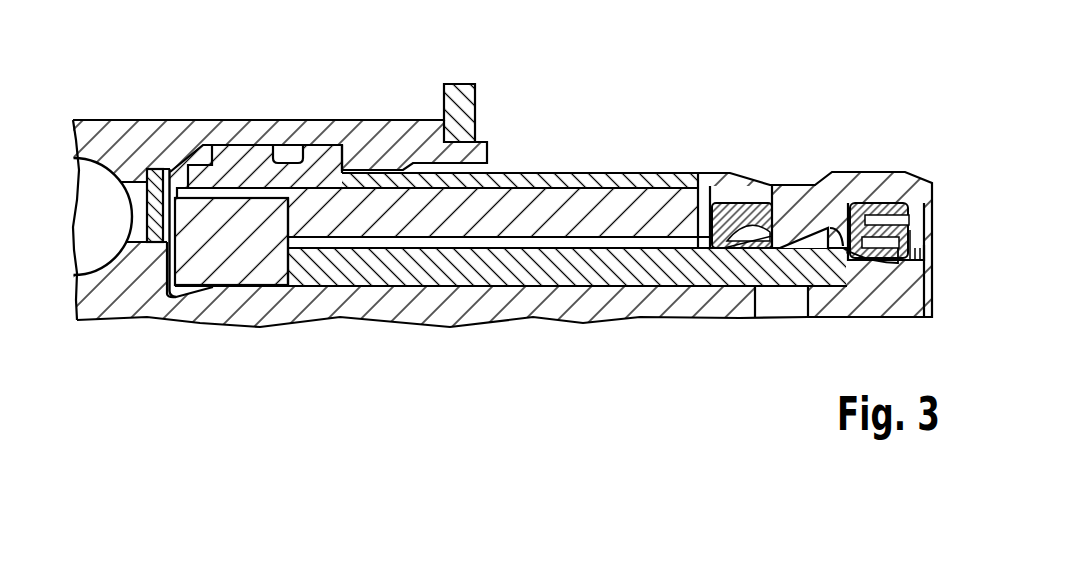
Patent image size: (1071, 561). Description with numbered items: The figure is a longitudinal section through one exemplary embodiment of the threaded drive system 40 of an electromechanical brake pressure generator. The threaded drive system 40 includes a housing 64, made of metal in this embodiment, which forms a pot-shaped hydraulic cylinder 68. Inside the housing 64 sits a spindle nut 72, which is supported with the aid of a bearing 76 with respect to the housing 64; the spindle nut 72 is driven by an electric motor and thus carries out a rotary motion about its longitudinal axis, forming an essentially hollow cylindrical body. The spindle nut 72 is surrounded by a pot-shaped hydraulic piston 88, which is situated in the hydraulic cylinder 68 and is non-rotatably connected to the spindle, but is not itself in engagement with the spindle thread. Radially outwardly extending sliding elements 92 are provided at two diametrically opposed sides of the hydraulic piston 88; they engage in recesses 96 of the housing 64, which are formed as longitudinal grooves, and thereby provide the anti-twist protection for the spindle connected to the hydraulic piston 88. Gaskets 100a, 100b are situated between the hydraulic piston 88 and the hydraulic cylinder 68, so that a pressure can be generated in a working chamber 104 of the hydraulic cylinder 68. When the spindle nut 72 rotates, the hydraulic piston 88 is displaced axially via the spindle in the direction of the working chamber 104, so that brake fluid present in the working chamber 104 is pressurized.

The threaded drive system 40 is at (512, 202).
The housing 64 is at (623, 182).
The hydraulic cylinder 68 is at (518, 262).
The spindle nut 72 is at (583, 308).
The bearing 76 is at (98, 190).
The hydraulic piston 88 is at (893, 302).
The sliding element 92 is at (223, 227).
The recess 96 is at (579, 203).
The gasket 100a is at (737, 210).
The gasket 100b is at (873, 207).
The working chamber 104 is at (924, 246).